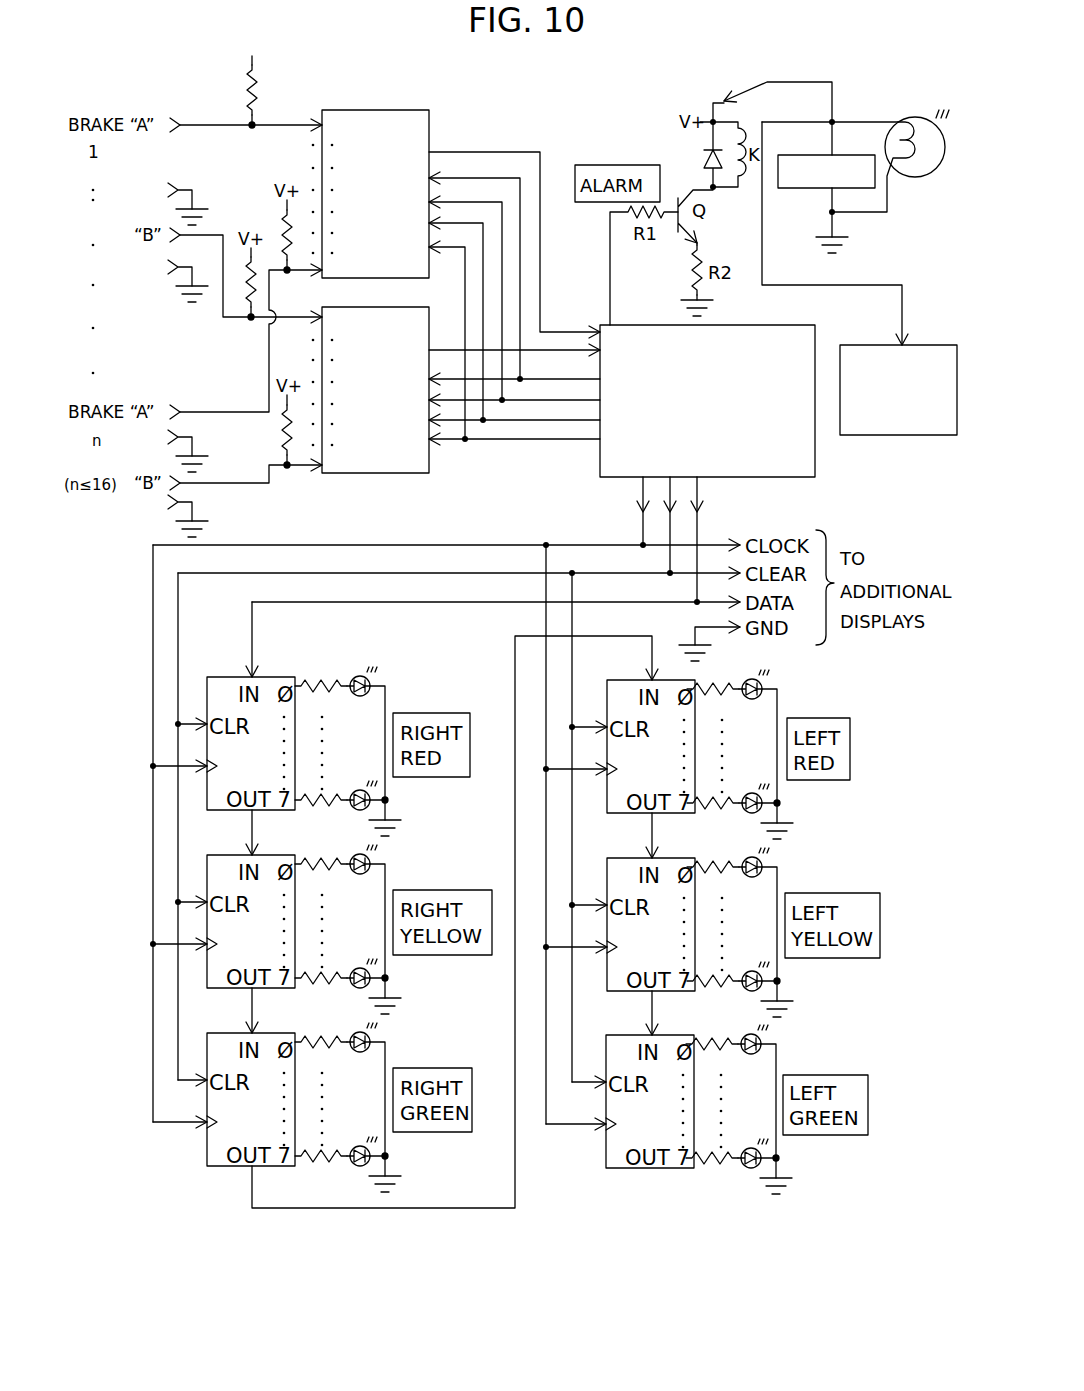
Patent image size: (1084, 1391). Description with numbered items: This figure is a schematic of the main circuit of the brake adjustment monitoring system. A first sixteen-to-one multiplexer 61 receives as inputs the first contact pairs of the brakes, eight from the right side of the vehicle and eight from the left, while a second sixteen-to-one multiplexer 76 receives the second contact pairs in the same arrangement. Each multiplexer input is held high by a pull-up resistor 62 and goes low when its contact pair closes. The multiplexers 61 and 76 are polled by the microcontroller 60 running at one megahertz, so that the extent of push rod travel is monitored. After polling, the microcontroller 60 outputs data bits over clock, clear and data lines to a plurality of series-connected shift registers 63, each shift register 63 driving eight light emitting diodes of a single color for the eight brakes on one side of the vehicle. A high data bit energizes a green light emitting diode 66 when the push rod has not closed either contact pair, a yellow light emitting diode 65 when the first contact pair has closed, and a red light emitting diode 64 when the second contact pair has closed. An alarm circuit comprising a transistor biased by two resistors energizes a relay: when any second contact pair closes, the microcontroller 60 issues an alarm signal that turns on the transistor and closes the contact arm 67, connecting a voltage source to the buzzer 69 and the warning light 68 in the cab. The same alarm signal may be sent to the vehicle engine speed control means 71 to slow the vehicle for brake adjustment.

The microcontroller 60 is at (745, 325).
The first 16:1 multiplexer 61 is at (429, 122).
The pull-up resistor 62 is at (256, 80).
The shift register 63 is at (273, 677).
The red light emitting diode 64 is at (373, 678).
The yellow light emitting diode 65 is at (373, 861).
The green light emitting diode 66 is at (373, 1038).
The contact arm 67 is at (752, 82).
The warning light 68 is at (912, 118).
The buzzer 69 is at (802, 188).
The vehicle engine speed control means 71 is at (888, 435).
The second 16:1 multiplexer 76 is at (395, 473).